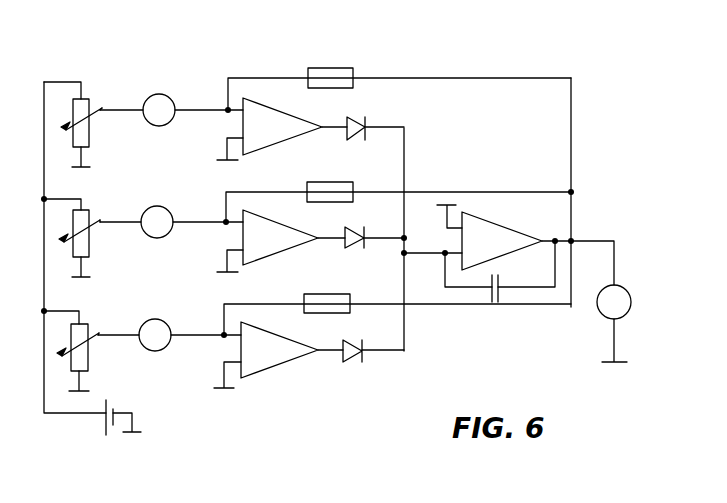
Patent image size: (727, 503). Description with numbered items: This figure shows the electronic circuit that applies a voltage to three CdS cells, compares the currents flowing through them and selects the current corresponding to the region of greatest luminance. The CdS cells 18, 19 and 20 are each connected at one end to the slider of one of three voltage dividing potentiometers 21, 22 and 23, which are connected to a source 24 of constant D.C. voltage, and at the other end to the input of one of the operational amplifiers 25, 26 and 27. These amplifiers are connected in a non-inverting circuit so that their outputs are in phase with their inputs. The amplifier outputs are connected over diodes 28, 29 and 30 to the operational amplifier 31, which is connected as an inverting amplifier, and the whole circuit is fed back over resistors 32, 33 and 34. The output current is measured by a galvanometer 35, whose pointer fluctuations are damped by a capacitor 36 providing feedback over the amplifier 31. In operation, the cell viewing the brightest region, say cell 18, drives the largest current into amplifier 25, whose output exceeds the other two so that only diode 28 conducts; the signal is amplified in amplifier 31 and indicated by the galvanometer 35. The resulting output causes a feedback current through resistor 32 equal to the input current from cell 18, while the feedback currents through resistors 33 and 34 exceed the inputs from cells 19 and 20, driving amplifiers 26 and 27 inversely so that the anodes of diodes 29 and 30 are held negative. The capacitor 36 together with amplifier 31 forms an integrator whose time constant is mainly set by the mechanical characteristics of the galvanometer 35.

The CdS cell 18 is at (162, 110).
The CdS cell 19 is at (160, 222).
The CdS cell 20 is at (162, 335).
The voltage dividing potentiometer 21 is at (92, 107).
The voltage dividing potentiometer 22 is at (90, 220).
The voltage dividing potentiometer 23 is at (80, 335).
The source of constant D.C. voltage 24 is at (108, 407).
The operational amplifier 25 is at (263, 118).
The operational amplifier 26 is at (257, 228).
The operational amplifier 27 is at (260, 343).
The diode 28 is at (360, 117).
The diode 29 is at (353, 232).
The diode 30 is at (350, 345).
The operational amplifier 31 is at (502, 245).
The feedback resistor 32 is at (335, 78).
The feedback resistor 33 is at (343, 183).
The feedback resistor 34 is at (338, 298).
The galvanometer 35 is at (620, 300).
The capacitor 36 is at (498, 286).